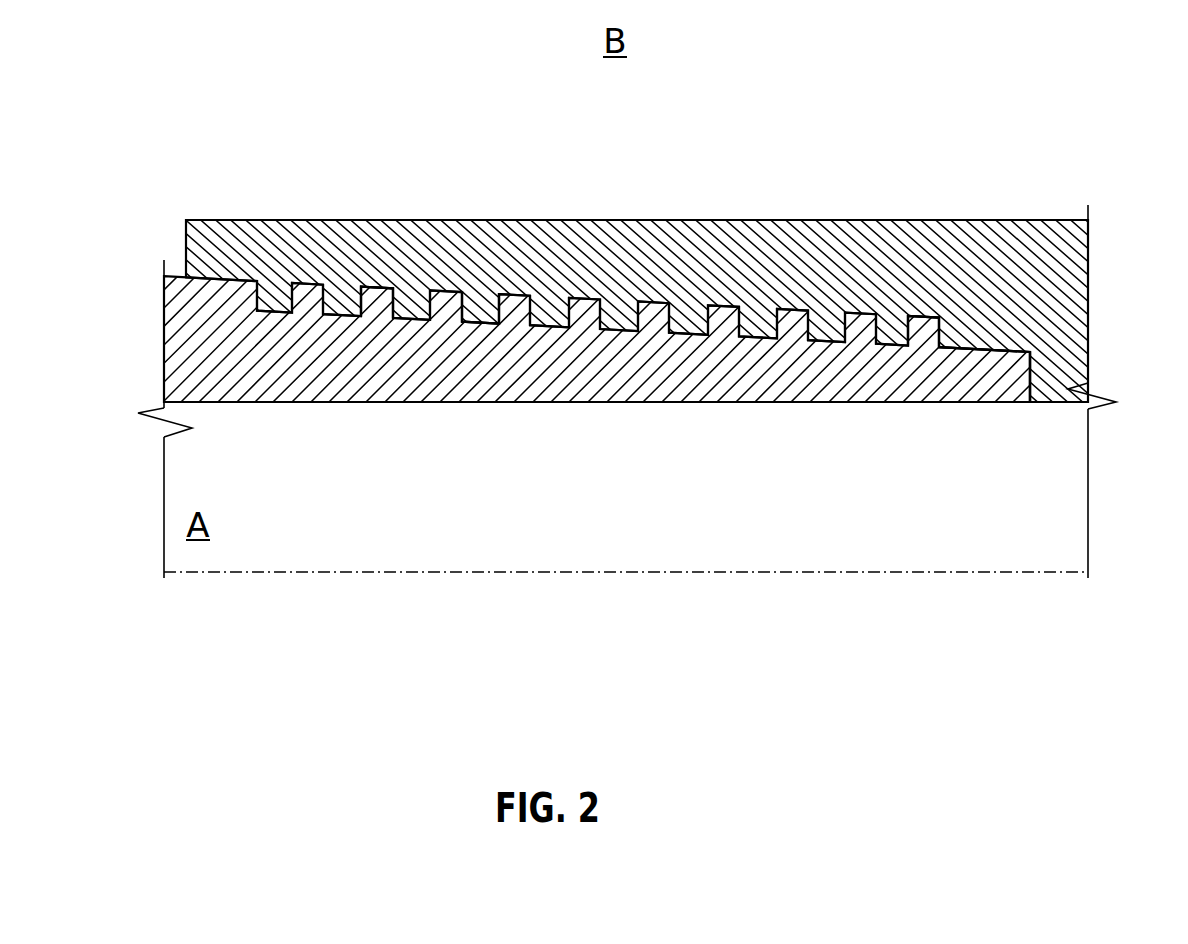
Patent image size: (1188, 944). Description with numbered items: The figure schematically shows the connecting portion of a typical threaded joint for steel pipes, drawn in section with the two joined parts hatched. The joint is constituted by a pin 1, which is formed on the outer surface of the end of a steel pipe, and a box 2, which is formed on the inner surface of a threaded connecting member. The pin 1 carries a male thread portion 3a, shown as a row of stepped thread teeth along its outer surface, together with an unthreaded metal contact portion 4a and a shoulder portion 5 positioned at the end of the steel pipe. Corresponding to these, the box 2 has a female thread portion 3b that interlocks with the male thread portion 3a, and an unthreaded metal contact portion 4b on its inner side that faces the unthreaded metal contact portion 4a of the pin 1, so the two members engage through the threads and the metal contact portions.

The pin 1 is at (152, 340).
The box 2 is at (809, 180).
The male thread portion 3a is at (365, 284).
The female thread portion 3b is at (478, 322).
The unthreaded metal contact portion 4a is at (973, 348).
The unthreaded metal contact portion 4b is at (985, 352).
The shoulder portion 5 is at (1030, 382).